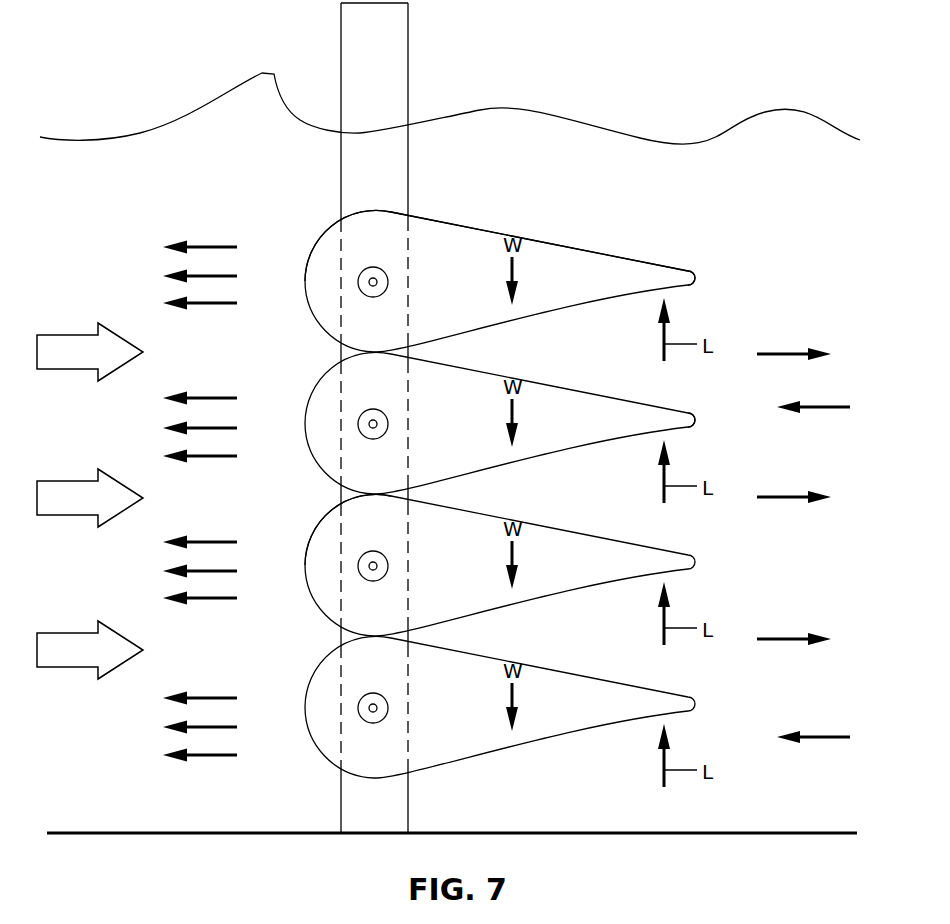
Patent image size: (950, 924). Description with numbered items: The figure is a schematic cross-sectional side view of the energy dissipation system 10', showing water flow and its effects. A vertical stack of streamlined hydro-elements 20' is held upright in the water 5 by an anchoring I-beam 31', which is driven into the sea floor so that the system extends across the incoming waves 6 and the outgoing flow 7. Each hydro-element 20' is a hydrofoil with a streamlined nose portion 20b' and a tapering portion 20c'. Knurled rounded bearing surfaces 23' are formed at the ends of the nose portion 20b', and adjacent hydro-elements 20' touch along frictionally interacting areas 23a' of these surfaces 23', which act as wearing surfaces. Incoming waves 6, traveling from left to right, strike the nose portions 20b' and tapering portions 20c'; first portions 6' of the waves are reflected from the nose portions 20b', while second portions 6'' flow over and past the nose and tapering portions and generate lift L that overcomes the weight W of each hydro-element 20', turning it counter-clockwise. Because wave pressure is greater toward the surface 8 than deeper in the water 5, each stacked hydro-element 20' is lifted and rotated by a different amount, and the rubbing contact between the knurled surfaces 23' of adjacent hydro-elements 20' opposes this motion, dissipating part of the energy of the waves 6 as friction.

The energy dissipation system 10' is at (104, 48).
The I-beam 31' is at (340, 418).
The surface 8 is at (712, 126).
The knurled rounded bearing surface 23' is at (539, 212).
The streamlined nose portion 20b' is at (325, 384).
The frictionally interacting area 23a' is at (423, 495).
The hydro-element 20' is at (500, 494).
The tapering portion 20c' is at (639, 349).
The water 5 is at (805, 222).
The incoming waves 6 is at (90, 477).
The first portions of waves 6' is at (200, 478).
The second portions of waves 6'' is at (794, 477).
The outgoing flow 7 is at (841, 409).